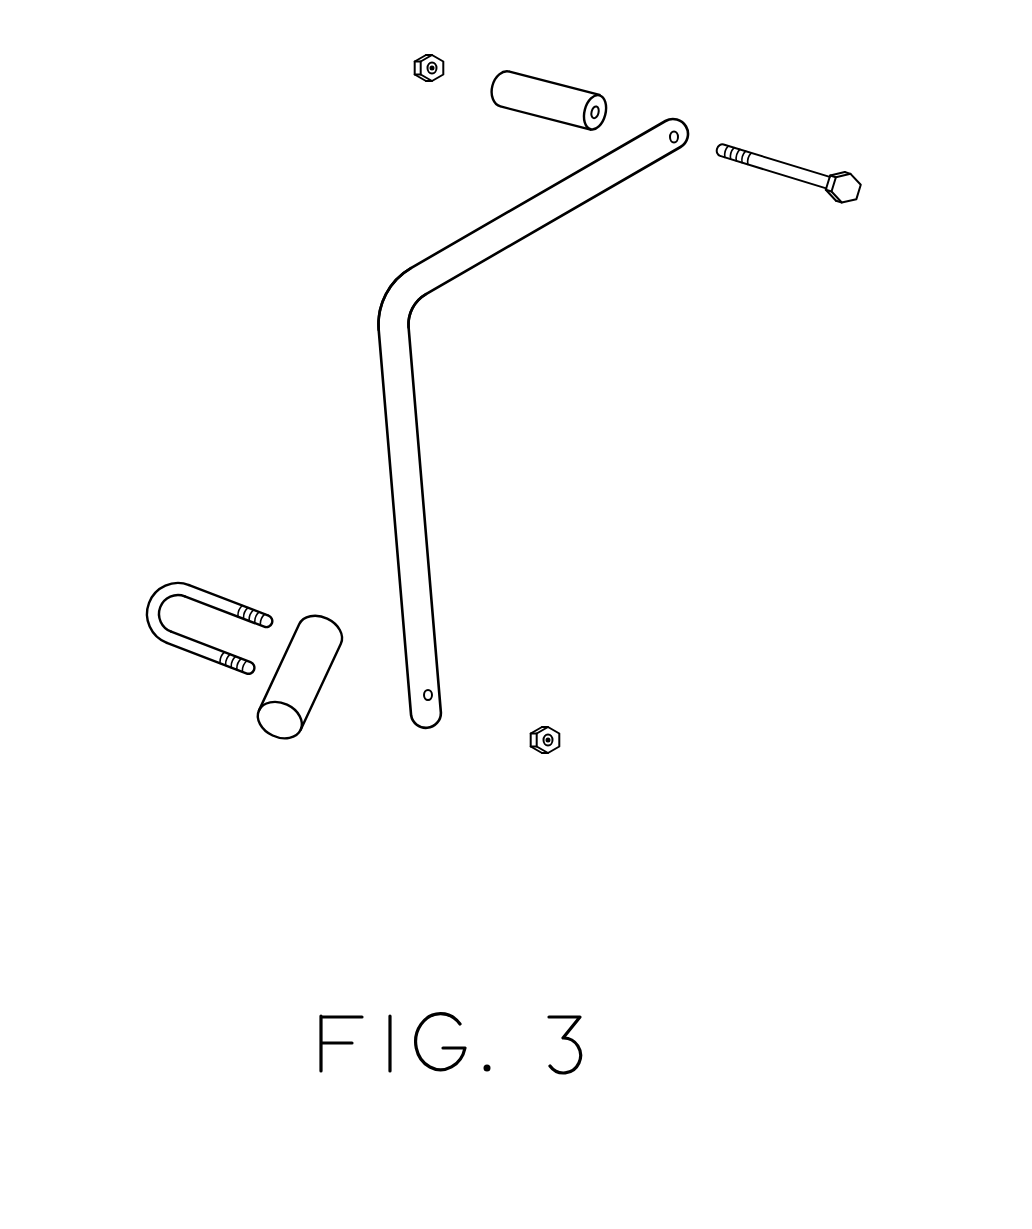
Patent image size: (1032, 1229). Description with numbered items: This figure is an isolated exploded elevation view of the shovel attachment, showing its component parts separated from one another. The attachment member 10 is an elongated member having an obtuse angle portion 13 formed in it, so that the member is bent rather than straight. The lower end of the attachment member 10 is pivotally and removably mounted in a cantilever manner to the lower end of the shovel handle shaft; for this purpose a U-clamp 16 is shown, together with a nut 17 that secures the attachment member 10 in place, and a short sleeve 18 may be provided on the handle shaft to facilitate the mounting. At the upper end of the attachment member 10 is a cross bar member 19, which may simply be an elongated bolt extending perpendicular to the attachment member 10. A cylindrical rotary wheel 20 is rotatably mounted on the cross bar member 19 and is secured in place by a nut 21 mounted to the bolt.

The attachment member 10 is at (510, 205).
The obtuse angle portion 13 is at (398, 303).
The U-clamp 16 is at (147, 596).
The nut 17 is at (565, 724).
The short sleeve 18 is at (303, 682).
The cross bar member 19 is at (795, 155).
The cylindrical rotary wheel 20 is at (548, 99).
The nut 21 is at (405, 48).